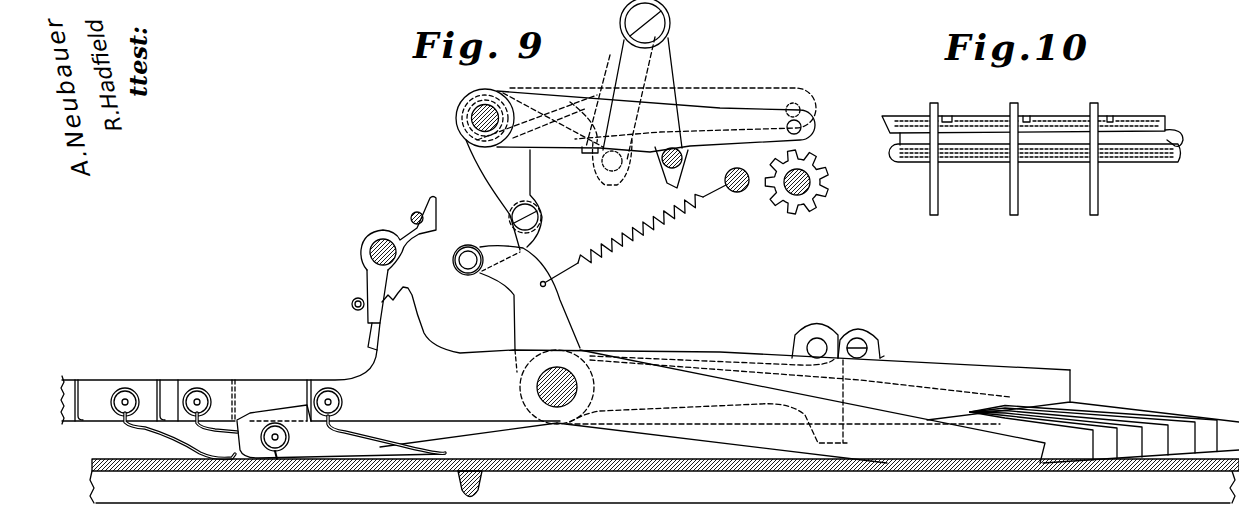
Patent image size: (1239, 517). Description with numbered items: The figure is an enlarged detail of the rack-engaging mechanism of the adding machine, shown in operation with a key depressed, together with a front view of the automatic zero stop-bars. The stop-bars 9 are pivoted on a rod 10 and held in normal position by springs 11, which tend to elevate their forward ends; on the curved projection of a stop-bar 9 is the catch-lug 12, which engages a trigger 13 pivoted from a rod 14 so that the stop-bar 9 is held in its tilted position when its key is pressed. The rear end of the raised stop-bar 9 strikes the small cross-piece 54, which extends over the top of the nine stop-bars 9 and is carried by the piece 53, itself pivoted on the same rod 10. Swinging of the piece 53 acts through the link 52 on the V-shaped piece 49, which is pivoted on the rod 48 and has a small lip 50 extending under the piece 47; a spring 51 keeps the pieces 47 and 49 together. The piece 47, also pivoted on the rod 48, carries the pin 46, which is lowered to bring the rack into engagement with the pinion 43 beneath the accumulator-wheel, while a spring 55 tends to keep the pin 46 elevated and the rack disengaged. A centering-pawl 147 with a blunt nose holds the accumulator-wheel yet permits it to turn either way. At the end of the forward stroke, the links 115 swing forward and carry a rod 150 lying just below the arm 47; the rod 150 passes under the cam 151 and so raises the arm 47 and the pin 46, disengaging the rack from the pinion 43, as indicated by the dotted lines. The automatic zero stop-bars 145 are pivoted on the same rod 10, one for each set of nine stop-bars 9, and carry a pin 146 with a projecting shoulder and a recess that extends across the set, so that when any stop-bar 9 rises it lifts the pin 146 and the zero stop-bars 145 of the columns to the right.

In FIG. 9, the stop-bar 9 is at (898, 406).
In FIG. 9, the rod 10 is at (560, 378).
In FIG. 9, the spring 11 is at (157, 437).
In FIG. 9, the catch-lug 12 is at (383, 301).
In FIG. 9, the trigger 13 is at (368, 284).
In FIG. 9, the rod 14 is at (366, 250).
In FIG. 9, the pinion 43 is at (830, 183).
In FIG. 9, the pin 46 is at (801, 124).
In FIG. 9, the piece 47 is at (646, 120).
In FIG. 9, the rod 48 is at (474, 121).
In FIG. 9, the V-shaped piece 49 is at (505, 193).
In FIG. 9, the lip 50 is at (590, 154).
In FIG. 9, the spring 51 is at (527, 110).
In FIG. 9, the link 52 is at (529, 238).
In FIG. 9, the piece 53 is at (516, 308).
In FIG. 9, the cross-piece 54 is at (818, 340).
In FIG. 9, the spring 55 is at (634, 236).
In FIG. 9, the link 115 is at (664, 75).
In FIG. 9, the automatic zero stop-bar 145 is at (882, 356).
In FIG. 10, the automatic zero stop-bar 145 is at (938, 200).
In FIG. 9, the pin 146 is at (860, 340).
In FIG. 10, the pin 146 is at (1158, 115).
In FIG. 10, the centering-pawl 147 is at (1106, 107).
In FIG. 9, the rod 150 is at (684, 158).
In FIG. 9, the cam 151 is at (624, 167).